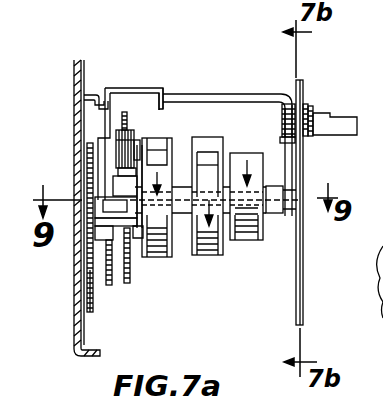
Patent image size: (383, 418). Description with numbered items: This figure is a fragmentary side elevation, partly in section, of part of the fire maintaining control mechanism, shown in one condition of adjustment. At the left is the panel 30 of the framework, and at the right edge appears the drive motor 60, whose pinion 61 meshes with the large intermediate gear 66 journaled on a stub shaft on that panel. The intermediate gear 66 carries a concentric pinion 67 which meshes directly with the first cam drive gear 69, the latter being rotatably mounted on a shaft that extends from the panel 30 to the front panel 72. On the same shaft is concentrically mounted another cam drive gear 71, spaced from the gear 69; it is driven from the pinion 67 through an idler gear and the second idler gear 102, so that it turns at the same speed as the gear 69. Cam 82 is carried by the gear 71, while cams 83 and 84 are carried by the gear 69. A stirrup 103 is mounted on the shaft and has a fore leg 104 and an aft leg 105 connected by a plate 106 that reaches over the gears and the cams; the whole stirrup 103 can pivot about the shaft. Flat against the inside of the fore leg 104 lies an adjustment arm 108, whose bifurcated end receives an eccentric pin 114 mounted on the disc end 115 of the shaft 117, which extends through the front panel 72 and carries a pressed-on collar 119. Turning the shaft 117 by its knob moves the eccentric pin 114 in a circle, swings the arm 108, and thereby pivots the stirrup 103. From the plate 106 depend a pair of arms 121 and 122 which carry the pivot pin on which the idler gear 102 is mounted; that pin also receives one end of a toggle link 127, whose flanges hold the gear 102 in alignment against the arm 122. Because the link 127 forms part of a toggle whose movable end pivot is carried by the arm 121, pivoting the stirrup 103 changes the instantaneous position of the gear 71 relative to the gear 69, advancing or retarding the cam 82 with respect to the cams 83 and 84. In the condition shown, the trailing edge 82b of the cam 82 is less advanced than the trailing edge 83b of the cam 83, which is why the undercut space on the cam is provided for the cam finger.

The panel 30 is at (75, 330).
The gear 60 is at (377, 268).
The pinion 61 is at (376, 290).
The large intermediate gear 66 is at (90, 290).
The concentric pinion 67 is at (90, 254).
The first cam drive gear 69 is at (109, 288).
The cam drive gear 71 is at (129, 286).
The front panel 72 is at (305, 268).
The cam 82 is at (164, 257).
The trailing edge 82b is at (168, 158).
The cam 83 is at (215, 256).
The trailing edge 83b is at (208, 196).
The cam 84 is at (251, 242).
The second idler gear 102 is at (132, 135).
The stirrup 103 is at (254, 96).
The fore leg 104 is at (303, 163).
The aft leg 105 is at (81, 126).
The plate 106 is at (215, 93).
The adjustment arm 108 is at (280, 138).
The eccentric pin 114 is at (282, 119).
The disc end 115 is at (312, 114).
The shaft 117 is at (352, 122).
The pressed-on collar 119 is at (307, 108).
The downwardly extending arm 121 is at (170, 97).
The downwardly extending arm 122 is at (104, 94).
The toggle link 127 is at (122, 152).